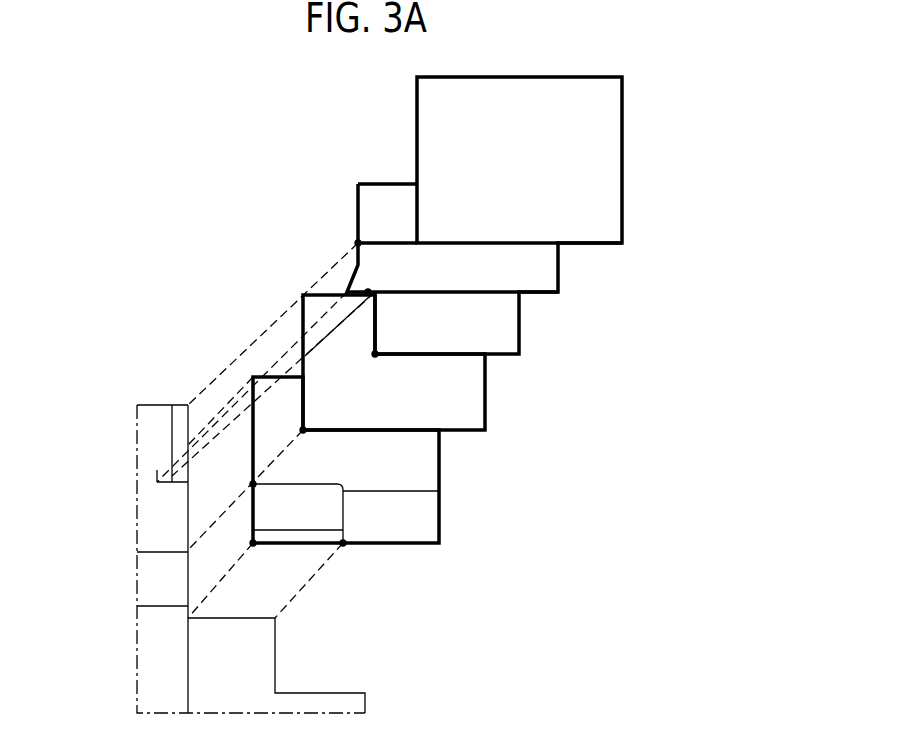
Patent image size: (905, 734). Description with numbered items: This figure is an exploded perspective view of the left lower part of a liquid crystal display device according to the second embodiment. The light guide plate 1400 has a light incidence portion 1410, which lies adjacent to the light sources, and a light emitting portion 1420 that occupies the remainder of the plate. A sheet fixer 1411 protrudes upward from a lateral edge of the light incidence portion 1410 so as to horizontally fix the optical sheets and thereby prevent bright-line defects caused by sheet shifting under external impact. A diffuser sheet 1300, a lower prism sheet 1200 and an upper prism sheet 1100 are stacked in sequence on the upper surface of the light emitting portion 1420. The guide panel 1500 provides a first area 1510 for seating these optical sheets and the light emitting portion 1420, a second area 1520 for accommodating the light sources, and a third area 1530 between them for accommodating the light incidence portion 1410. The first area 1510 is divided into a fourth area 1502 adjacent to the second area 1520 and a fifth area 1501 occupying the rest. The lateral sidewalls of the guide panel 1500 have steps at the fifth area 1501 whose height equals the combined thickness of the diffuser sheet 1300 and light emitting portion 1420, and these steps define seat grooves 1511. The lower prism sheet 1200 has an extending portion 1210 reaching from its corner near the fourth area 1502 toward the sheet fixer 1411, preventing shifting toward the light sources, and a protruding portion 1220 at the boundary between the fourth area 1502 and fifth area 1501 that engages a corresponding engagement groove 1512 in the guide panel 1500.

The upper prism sheet 1100 is at (622, 187).
The lower prism sheet 1200 is at (464, 270).
The extending portion 1210 is at (519, 320).
The protruding portion 1220 is at (349, 272).
The diffuser sheet 1300 is at (485, 385).
The light guide plate 1400 is at (404, 480).
The light incidence portion 1410 is at (374, 532).
The sheet fixer 1411 is at (328, 519).
The light emitting portion 1420 is at (415, 460).
The guide panel 1500 is at (225, 525).
The first area 1510 is at (103, 444).
The fifth area 1501 is at (132, 410).
The fourth area 1502 is at (130, 517).
The seat groove 1511 is at (175, 399).
The engagement groove 1512 is at (157, 476).
The second area 1520 is at (128, 606).
The third area 1530 is at (128, 552).